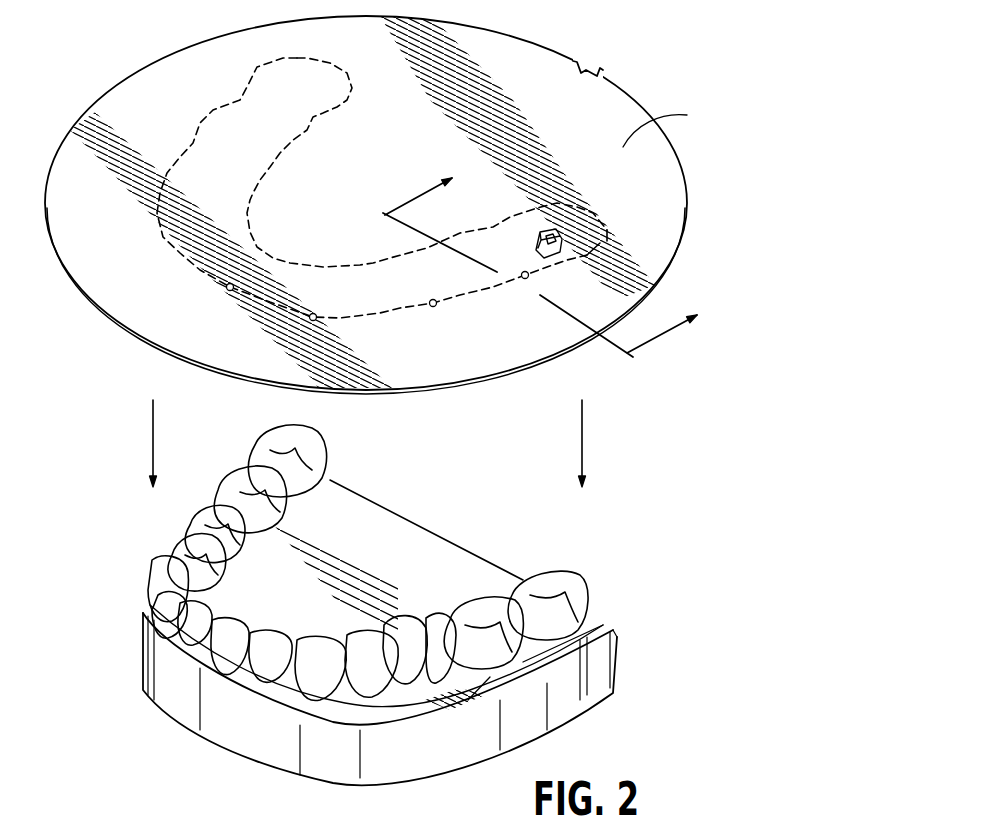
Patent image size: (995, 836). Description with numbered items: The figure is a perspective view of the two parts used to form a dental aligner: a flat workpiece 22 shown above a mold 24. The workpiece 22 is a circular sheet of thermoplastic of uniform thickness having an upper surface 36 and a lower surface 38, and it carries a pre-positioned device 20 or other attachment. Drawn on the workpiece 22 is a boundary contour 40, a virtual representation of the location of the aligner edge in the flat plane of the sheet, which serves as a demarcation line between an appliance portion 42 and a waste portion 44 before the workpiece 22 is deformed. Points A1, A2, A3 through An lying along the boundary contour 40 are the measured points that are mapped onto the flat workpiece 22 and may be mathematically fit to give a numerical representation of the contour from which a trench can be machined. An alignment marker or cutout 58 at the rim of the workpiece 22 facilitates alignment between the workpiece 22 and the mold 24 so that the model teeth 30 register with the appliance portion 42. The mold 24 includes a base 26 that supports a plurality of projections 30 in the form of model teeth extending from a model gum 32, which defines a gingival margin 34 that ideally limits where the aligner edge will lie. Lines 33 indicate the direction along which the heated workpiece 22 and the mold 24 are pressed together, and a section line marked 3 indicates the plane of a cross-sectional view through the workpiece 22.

The workpiece 22 is at (590, 38).
The alignment marker or cutout 58 is at (600, 70).
The upper surface 36 is at (670, 123).
The waste portion 44 is at (547, 107).
The boundary contour 40 is at (337, 107).
The appliance portion 42 is at (390, 300).
The pre-positioned device 20 is at (558, 240).
The lower surface 38 is at (128, 338).
The first measured point A1 is at (228, 290).
The second measured point A2 is at (311, 320).
The third measured point A3 is at (432, 306).
The nth measured point An is at (525, 278).
The section line for FIG. 3 is at (526, 280).
The pressing direction lines 33 is at (155, 440).
The mold 24 is at (583, 566).
The projections (model teeth) 30 is at (153, 580).
The base 26 is at (273, 760).
The model gum 32 is at (357, 703).
The gingival margin 34 is at (468, 700).